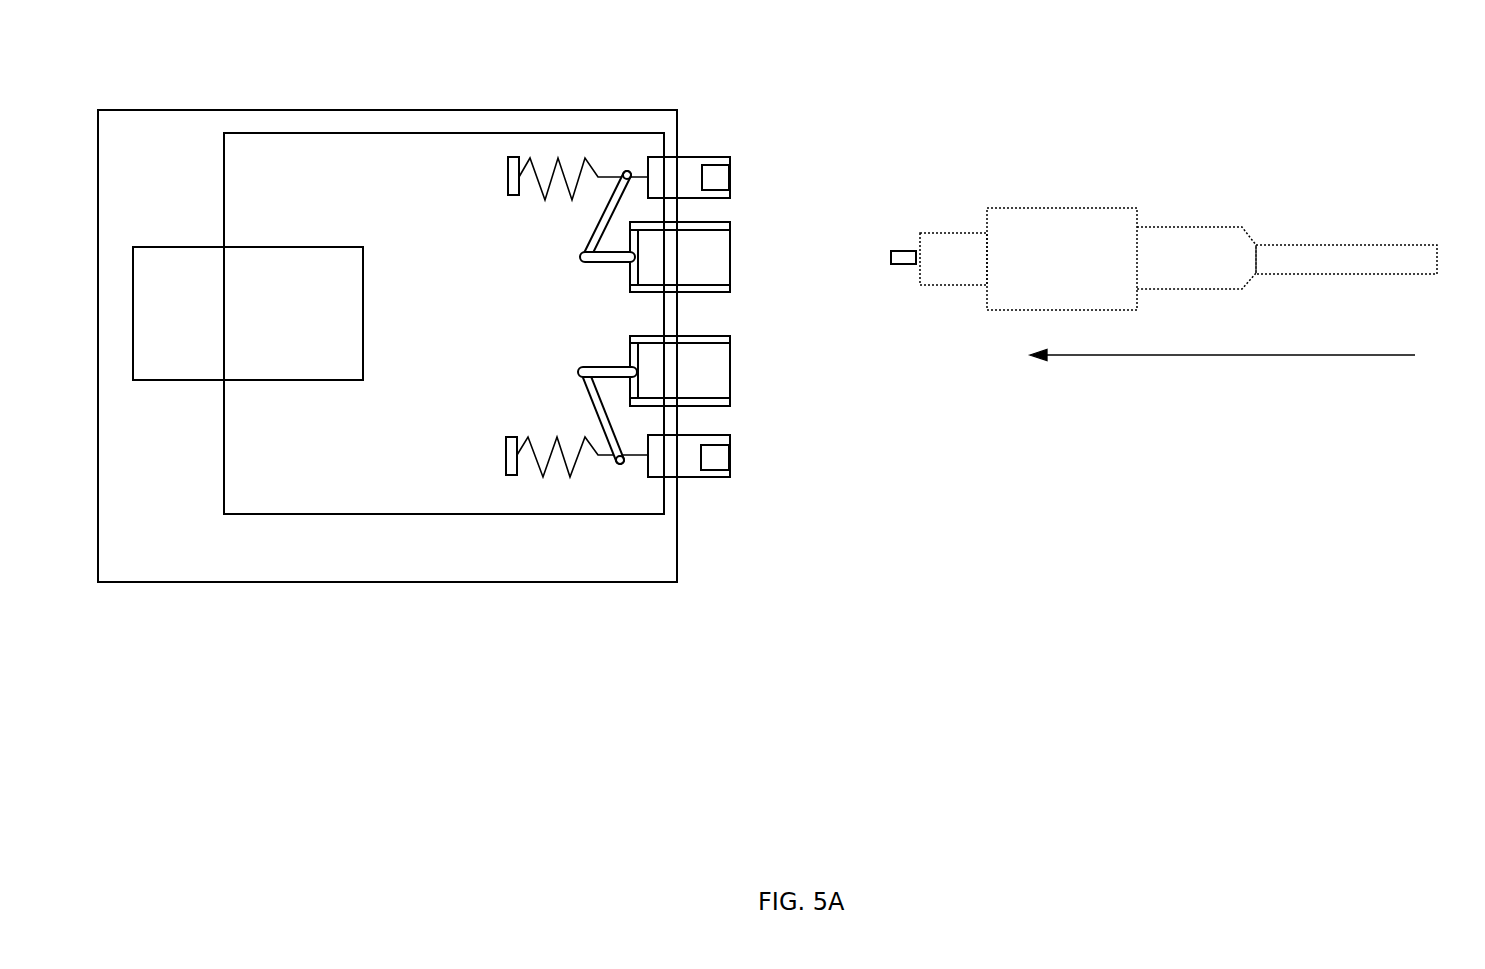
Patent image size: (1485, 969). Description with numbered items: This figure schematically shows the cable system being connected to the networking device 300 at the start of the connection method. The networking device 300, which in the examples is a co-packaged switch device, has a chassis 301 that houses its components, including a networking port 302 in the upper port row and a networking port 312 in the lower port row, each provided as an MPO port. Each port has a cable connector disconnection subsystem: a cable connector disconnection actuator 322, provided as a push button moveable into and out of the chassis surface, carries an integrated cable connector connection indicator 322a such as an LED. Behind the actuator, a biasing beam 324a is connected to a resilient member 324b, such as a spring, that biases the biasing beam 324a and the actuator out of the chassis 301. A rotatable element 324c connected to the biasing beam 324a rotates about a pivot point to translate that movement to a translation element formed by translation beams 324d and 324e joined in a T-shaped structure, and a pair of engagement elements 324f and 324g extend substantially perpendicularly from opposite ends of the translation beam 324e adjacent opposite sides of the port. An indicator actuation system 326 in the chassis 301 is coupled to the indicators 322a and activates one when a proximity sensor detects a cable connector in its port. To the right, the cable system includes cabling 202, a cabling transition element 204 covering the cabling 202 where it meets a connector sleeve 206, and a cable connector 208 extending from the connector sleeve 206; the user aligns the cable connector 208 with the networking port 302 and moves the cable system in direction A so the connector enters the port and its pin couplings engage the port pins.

The networking device 300 is at (664, 566).
The indicator actuation system 326 is at (268, 372).
The chassis 301 is at (677, 110).
The cable connector disconnection actuator 322 is at (690, 156).
The cable connector connection indicator 322a is at (732, 176).
The networking port 302 is at (730, 258).
The networking port 312 is at (730, 370).
The biasing beam 324a is at (640, 177).
The resilient member 324b is at (543, 199).
The rotatable element 324c is at (600, 215).
The translation beam 324d is at (582, 258).
The translation beam 324e is at (630, 357).
The engagement element 324f is at (732, 225).
The engagement element 324g is at (730, 290).
The cable connector 208 is at (970, 233).
The connector sleeve 206 is at (1083, 213).
The cabling transition element 204 is at (1200, 227).
The cabling 202 is at (1345, 242).
The direction A is at (1200, 355).